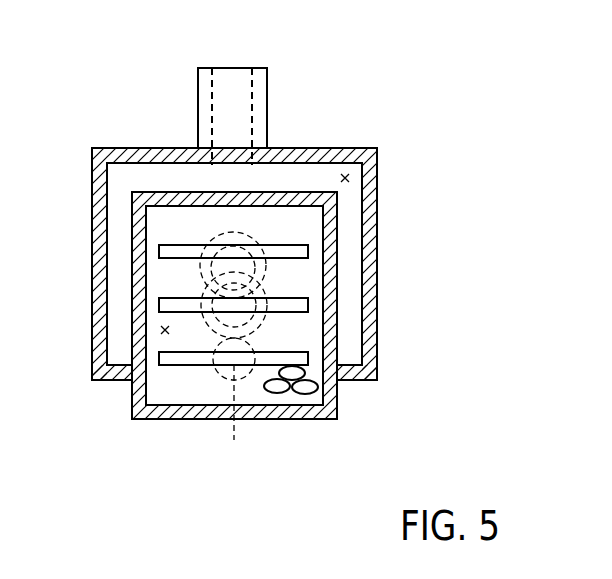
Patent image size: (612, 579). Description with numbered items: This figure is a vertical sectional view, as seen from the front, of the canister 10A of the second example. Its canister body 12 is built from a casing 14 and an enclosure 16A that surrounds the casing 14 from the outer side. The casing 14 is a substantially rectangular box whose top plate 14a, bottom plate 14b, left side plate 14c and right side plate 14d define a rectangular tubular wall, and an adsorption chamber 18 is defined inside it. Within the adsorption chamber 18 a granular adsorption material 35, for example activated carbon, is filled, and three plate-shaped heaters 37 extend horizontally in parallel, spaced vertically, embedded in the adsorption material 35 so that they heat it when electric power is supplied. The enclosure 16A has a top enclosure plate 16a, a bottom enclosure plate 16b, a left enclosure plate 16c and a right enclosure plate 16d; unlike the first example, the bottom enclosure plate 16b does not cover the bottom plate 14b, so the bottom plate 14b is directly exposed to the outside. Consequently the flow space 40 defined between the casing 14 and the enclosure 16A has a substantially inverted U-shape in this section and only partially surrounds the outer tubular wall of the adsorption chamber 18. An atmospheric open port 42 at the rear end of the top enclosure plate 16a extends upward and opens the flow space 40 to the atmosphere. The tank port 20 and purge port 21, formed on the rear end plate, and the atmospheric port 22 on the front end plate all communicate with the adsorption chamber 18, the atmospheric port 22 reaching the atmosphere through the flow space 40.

The canister 10A is at (376, 92).
The canister body 12 is at (413, 191).
The casing 14 is at (118, 274).
The top plate 14a is at (163, 190).
The bottom plate 14b is at (163, 415).
The left side plate 14c is at (137, 393).
The right side plate 14d is at (333, 312).
The top enclosure plate 16a is at (297, 157).
The bottom enclosure plate 16b is at (357, 372).
The left enclosure plate 16c is at (97, 186).
The right enclosure plate 16d is at (370, 213).
The enclosure 16A is at (391, 281).
The adsorption chamber 18 is at (160, 331).
The tank port 20 is at (267, 267).
The purge port 21 is at (237, 407).
The atmospheric port 22 is at (254, 326).
The adsorption material 35 is at (307, 390).
The heaters 37 is at (162, 249).
The flow space 40 is at (363, 160).
The atmospheric open port 42 is at (205, 93).